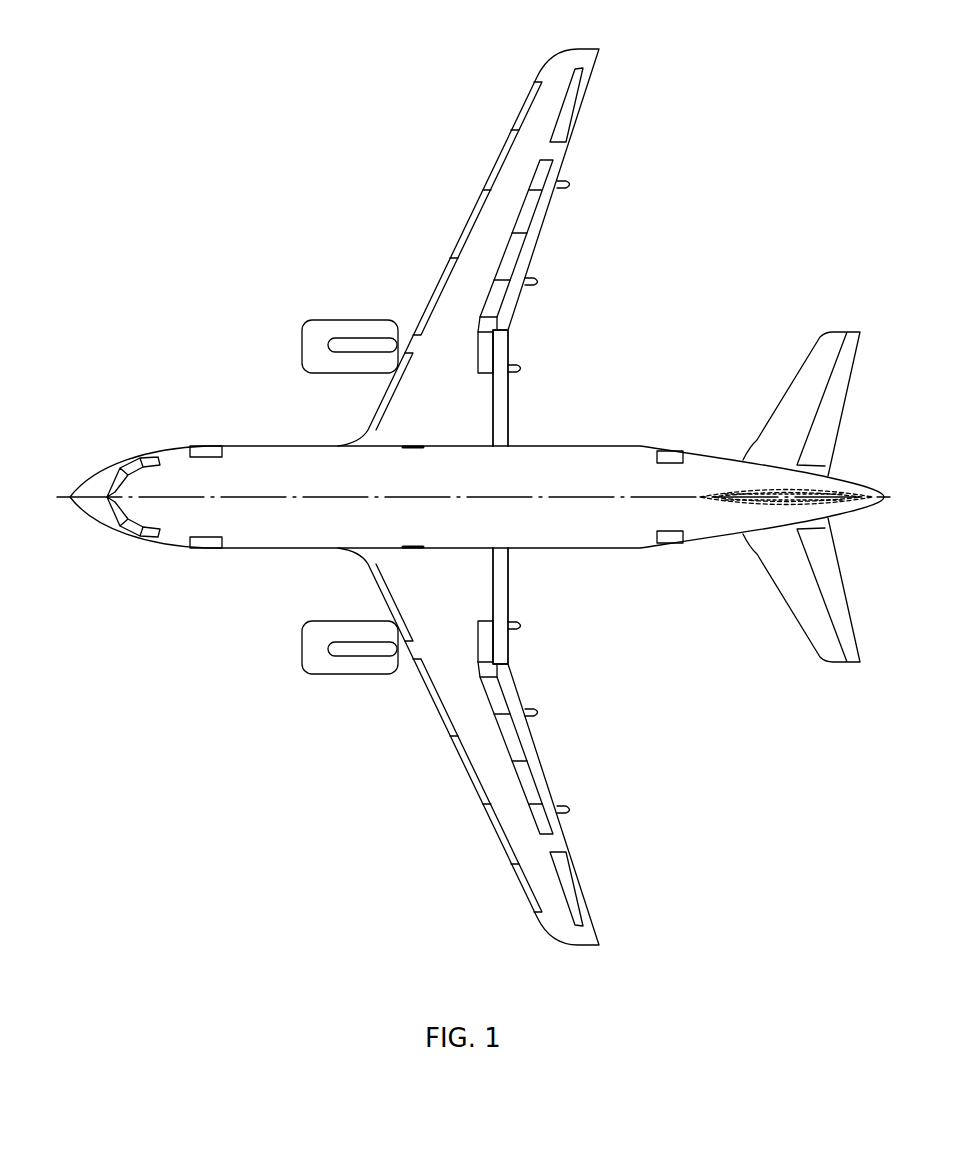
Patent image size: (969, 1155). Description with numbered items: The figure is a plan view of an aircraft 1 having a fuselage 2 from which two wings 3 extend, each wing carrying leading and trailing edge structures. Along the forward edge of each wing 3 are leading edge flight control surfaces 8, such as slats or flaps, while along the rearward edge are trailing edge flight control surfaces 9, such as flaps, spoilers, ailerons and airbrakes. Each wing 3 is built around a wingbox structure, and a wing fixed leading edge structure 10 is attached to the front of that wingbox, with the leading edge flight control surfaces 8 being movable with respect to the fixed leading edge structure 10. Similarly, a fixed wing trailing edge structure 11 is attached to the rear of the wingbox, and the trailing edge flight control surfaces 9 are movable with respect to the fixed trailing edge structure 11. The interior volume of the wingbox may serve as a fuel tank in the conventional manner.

The aircraft 1 is at (175, 252).
The fuselage 2 is at (640, 447).
The wing 3 is at (487, 243).
The leading edge flight control surface 8 is at (513, 132).
The trailing edge flight control surface 9 is at (575, 895).
The wing fixed leading edge structure 10 is at (398, 400).
The fixed wing trailing edge structure 11 is at (467, 418).